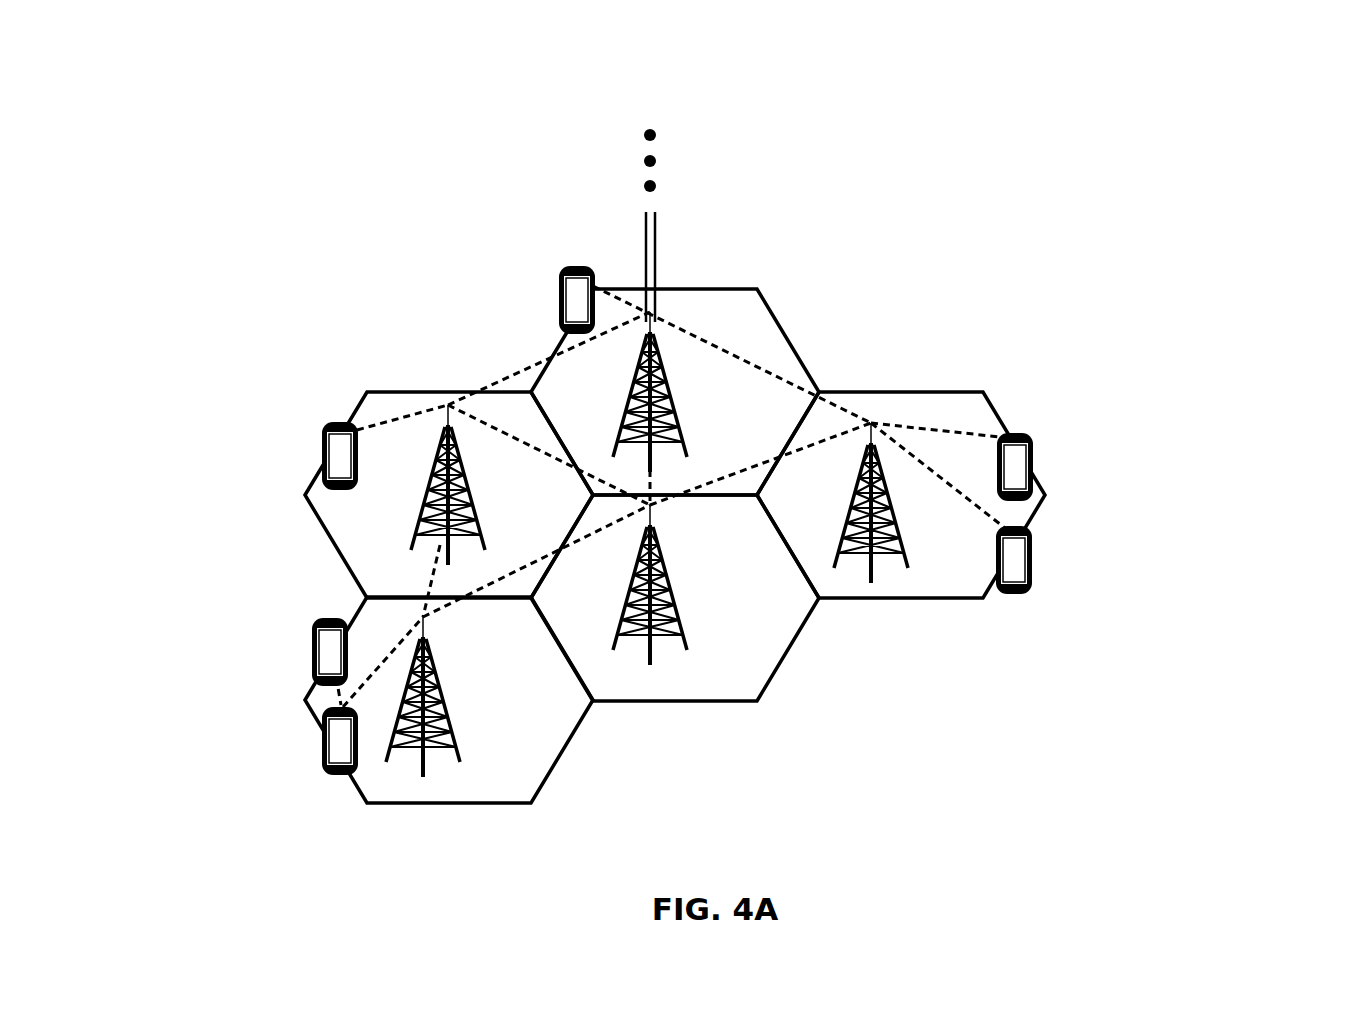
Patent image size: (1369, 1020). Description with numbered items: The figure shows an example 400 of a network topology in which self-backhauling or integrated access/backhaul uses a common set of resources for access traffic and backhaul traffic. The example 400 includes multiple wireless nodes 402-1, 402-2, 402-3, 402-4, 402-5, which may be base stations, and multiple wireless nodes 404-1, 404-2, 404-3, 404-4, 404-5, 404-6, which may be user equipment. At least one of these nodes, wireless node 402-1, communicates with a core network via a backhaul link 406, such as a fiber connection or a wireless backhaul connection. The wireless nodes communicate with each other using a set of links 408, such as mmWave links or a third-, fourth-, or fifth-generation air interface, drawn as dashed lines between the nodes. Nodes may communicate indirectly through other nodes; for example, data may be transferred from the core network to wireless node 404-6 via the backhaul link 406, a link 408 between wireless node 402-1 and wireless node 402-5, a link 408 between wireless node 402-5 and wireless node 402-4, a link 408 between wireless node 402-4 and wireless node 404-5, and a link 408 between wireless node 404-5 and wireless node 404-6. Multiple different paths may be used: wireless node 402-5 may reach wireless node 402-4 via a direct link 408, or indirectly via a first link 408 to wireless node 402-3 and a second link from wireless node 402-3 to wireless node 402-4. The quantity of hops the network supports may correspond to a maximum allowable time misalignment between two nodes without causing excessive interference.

The example of a network topology 400 is at (214, 82).
The wireless node 402-1 is at (675, 392).
The wireless node 402-2 is at (901, 540).
The wireless node 402-3 is at (675, 598).
The wireless node 402-4 is at (449, 700).
The wireless node 402-5 is at (449, 495).
The wireless node 404-1 is at (527, 270).
The wireless node 404-2 is at (1064, 444).
The wireless node 404-3 is at (1063, 546).
The wireless node 404-4 is at (290, 432).
The wireless node 404-5 is at (291, 766).
The wireless node 404-6 is at (276, 637).
The backhaul link 406 is at (710, 225).
The links 408 is at (1032, 214).